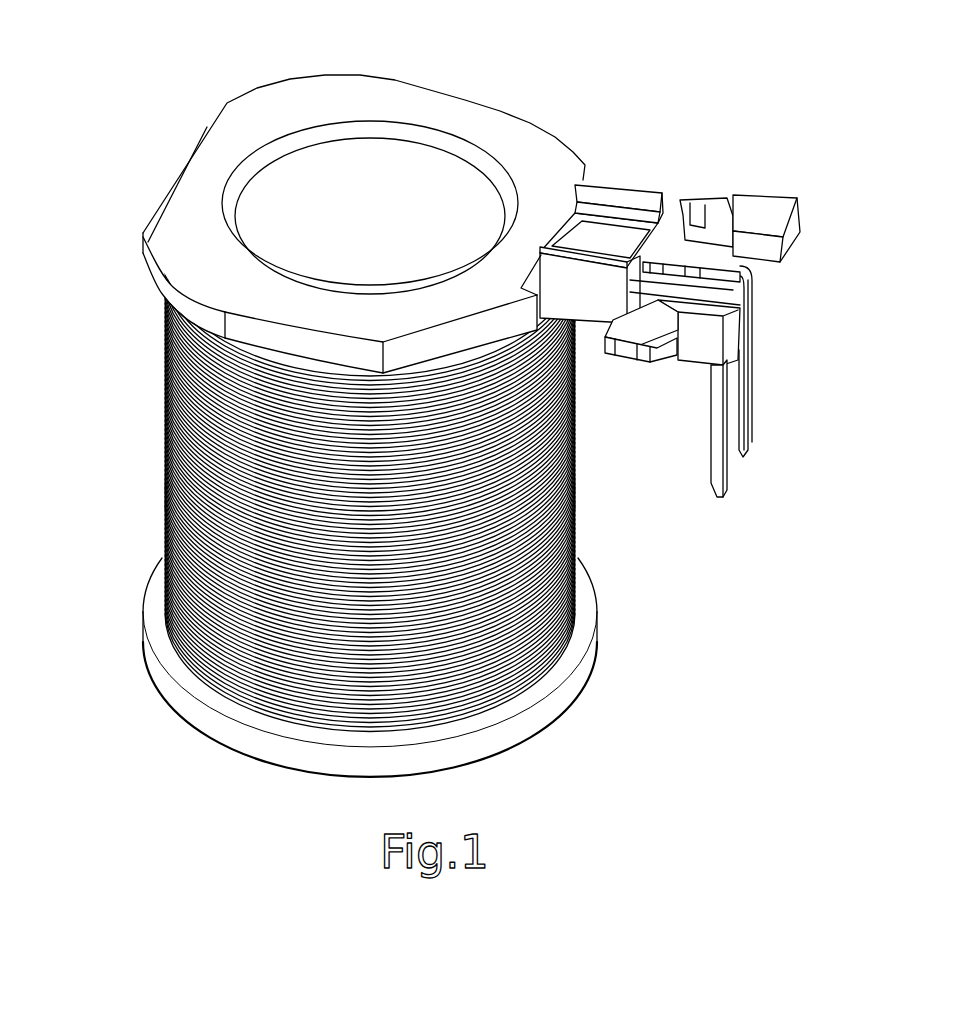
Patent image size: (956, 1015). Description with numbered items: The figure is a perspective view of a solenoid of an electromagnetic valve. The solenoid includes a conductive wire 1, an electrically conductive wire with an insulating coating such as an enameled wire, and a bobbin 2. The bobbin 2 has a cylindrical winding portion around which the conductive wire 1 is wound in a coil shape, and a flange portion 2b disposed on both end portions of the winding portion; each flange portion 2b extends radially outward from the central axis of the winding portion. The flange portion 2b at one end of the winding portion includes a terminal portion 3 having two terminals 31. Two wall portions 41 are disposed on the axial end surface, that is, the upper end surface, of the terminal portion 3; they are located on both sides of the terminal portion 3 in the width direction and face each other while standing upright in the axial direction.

The conductive wire 1 is at (160, 464).
The bobbin 2 is at (116, 142).
The flange portion 2b is at (343, 95).
The terminal portion 3 is at (618, 247).
The terminal 31 is at (712, 202).
The wall portion 41 is at (605, 186).